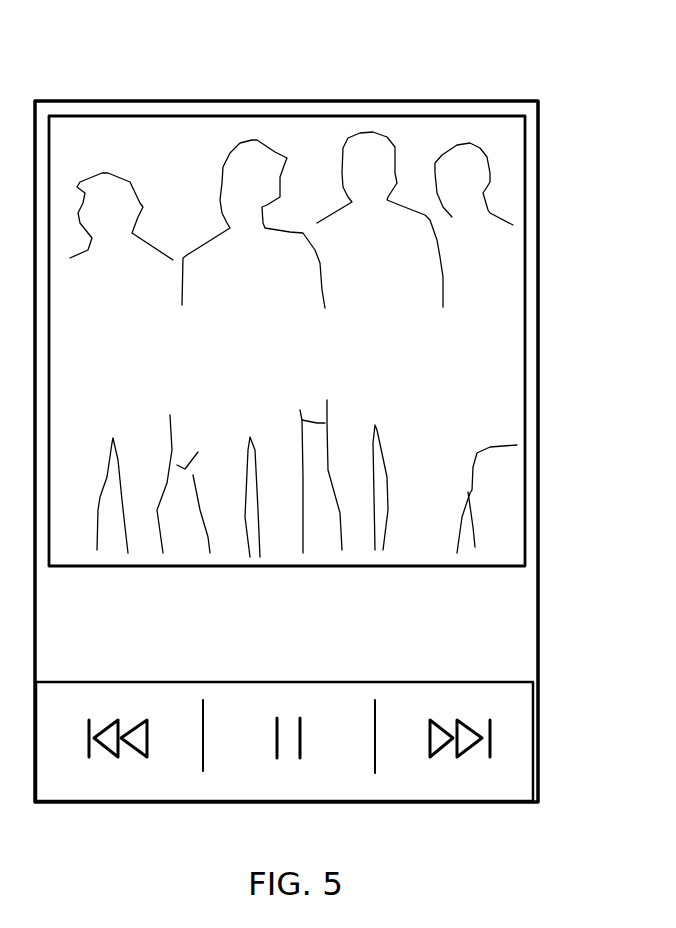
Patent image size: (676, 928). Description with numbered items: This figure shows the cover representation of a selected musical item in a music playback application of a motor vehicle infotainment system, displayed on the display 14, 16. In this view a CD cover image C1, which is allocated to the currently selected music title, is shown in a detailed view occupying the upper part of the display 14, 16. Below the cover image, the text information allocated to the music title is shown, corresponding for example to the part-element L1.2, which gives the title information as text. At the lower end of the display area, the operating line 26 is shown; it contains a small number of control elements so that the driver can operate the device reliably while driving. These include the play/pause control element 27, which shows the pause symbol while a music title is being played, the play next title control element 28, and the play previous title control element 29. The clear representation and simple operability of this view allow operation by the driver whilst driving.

The display 14 is at (536, 70).
The display 16 is at (536, 70).
The CD cover image C1 is at (493, 395).
The part-element of text information L1.2 is at (500, 645).
The operating line 26 is at (556, 743).
The play previous title control element 29 is at (118, 782).
The play/pause control element 27 is at (286, 785).
The play next title control element 28 is at (473, 783).